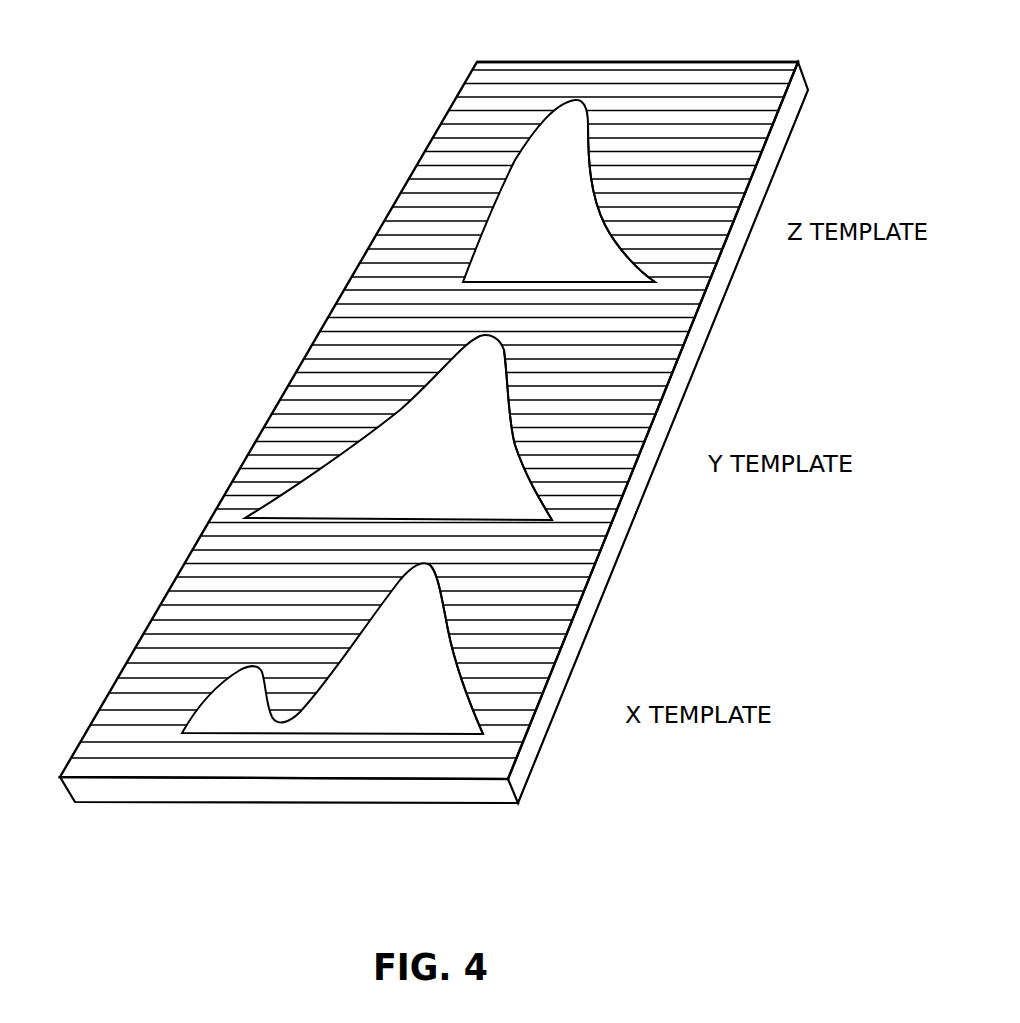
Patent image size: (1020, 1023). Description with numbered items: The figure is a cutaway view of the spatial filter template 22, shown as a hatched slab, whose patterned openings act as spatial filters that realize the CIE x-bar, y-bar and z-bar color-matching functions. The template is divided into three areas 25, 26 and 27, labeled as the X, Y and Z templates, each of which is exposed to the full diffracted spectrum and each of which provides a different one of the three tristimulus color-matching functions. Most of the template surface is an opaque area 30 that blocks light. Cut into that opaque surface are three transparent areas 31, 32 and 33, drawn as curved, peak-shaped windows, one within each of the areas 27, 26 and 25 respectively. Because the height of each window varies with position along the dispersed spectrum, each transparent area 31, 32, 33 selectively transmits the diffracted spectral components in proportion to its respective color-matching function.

The spatial filter template 22 is at (143, 795).
The opaque area 30 is at (545, 62).
The area 25 is at (84, 693).
The area 26 is at (228, 448).
The area 27 is at (360, 211).
The transparent area 31 is at (607, 263).
The transparent area 32 is at (500, 493).
The transparent area 33 is at (440, 712).